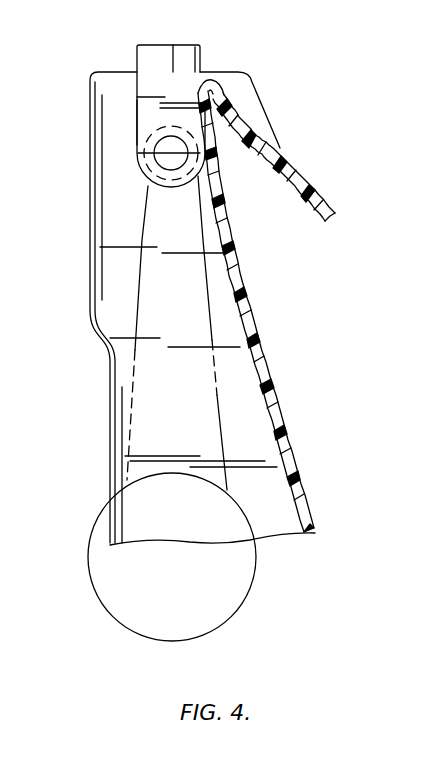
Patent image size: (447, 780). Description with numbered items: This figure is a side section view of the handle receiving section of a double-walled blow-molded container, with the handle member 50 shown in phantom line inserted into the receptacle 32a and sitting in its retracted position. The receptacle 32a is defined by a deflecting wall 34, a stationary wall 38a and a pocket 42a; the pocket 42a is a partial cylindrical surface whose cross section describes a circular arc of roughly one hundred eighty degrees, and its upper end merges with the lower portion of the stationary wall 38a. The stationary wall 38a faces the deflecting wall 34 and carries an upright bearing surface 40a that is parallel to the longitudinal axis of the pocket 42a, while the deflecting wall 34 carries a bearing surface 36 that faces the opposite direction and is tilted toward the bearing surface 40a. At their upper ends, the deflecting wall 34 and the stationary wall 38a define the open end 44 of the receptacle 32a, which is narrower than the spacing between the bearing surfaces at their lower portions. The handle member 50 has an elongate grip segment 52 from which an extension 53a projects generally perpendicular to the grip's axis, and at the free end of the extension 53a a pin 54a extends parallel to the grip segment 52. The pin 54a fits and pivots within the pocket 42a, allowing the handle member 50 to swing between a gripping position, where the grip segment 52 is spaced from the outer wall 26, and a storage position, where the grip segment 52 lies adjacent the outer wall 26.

The outer wall 26 is at (296, 508).
The receptacle 32a is at (152, 210).
The deflecting wall 34 is at (223, 98).
The bearing surface 36 is at (206, 82).
The stationary wall 38a is at (137, 120).
The bearing surface 40a is at (143, 86).
The pocket 42a is at (142, 186).
The open end 44 is at (183, 82).
The handle member 50 is at (122, 660).
The grip segment 52 is at (208, 620).
The extension 53a is at (148, 432).
The pin 54a is at (182, 170).